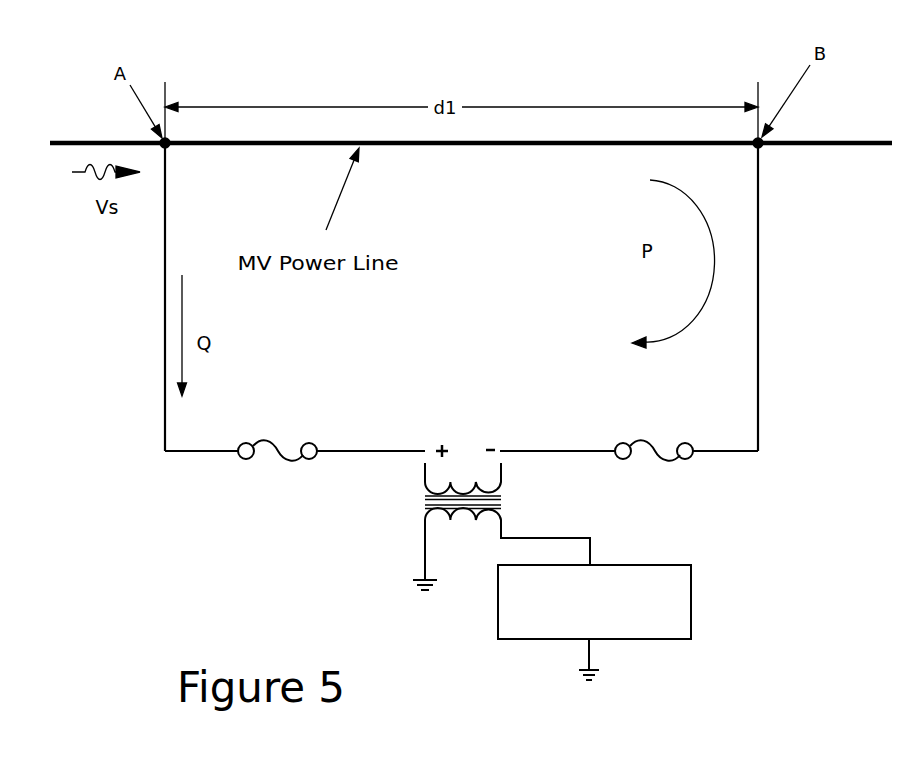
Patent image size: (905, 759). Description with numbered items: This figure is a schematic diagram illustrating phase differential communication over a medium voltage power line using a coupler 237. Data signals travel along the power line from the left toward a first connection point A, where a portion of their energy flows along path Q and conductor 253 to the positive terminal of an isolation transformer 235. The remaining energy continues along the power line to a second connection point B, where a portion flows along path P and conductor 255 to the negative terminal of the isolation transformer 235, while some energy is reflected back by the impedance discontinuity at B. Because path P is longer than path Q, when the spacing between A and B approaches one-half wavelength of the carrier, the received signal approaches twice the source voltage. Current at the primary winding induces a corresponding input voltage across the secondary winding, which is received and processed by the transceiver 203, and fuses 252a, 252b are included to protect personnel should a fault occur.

The conductor 253 is at (203, 410).
The conductor 255 is at (778, 436).
The fuse 252a is at (312, 414).
The fuse 252b is at (617, 414).
The coupler 237 is at (742, 509).
The isolation transformer 235 is at (402, 518).
The transceiver 203 is at (594, 622).